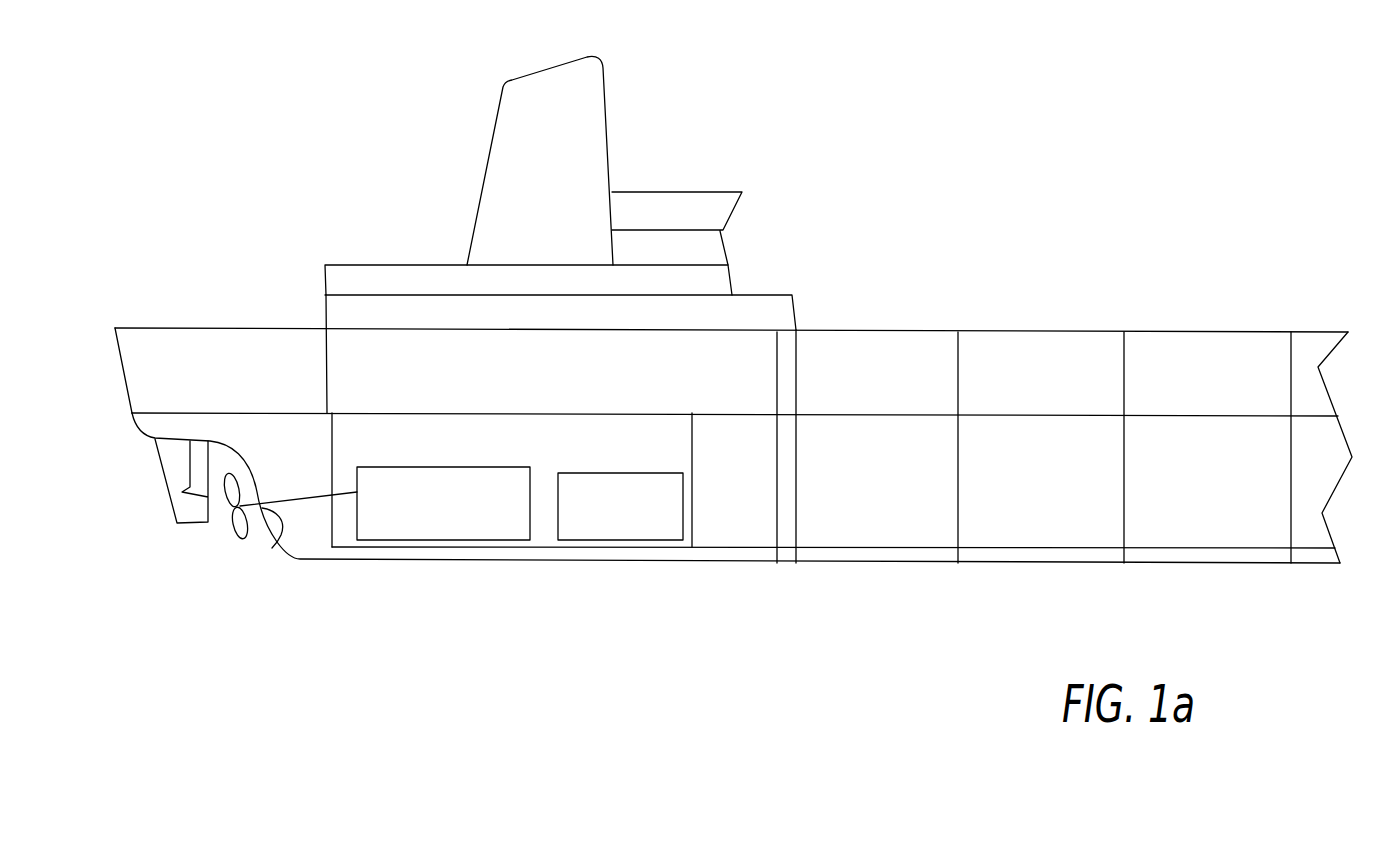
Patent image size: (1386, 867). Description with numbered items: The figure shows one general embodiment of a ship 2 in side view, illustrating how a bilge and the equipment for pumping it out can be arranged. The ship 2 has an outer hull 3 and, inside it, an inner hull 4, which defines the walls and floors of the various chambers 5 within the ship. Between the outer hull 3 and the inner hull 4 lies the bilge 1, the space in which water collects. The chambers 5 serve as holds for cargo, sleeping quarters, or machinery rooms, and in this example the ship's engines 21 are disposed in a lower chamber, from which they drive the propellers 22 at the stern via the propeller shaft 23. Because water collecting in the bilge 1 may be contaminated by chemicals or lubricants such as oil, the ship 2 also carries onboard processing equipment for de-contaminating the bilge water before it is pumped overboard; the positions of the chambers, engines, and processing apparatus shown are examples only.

The bilge 1 is at (320, 552).
The ship 2 is at (982, 238).
The outer hull 3 is at (708, 563).
The inner hull 4 is at (580, 548).
The chambers 5 is at (333, 348).
The engines 21 is at (445, 530).
The propellers 22 is at (227, 532).
The propeller shaft 23 is at (275, 543).